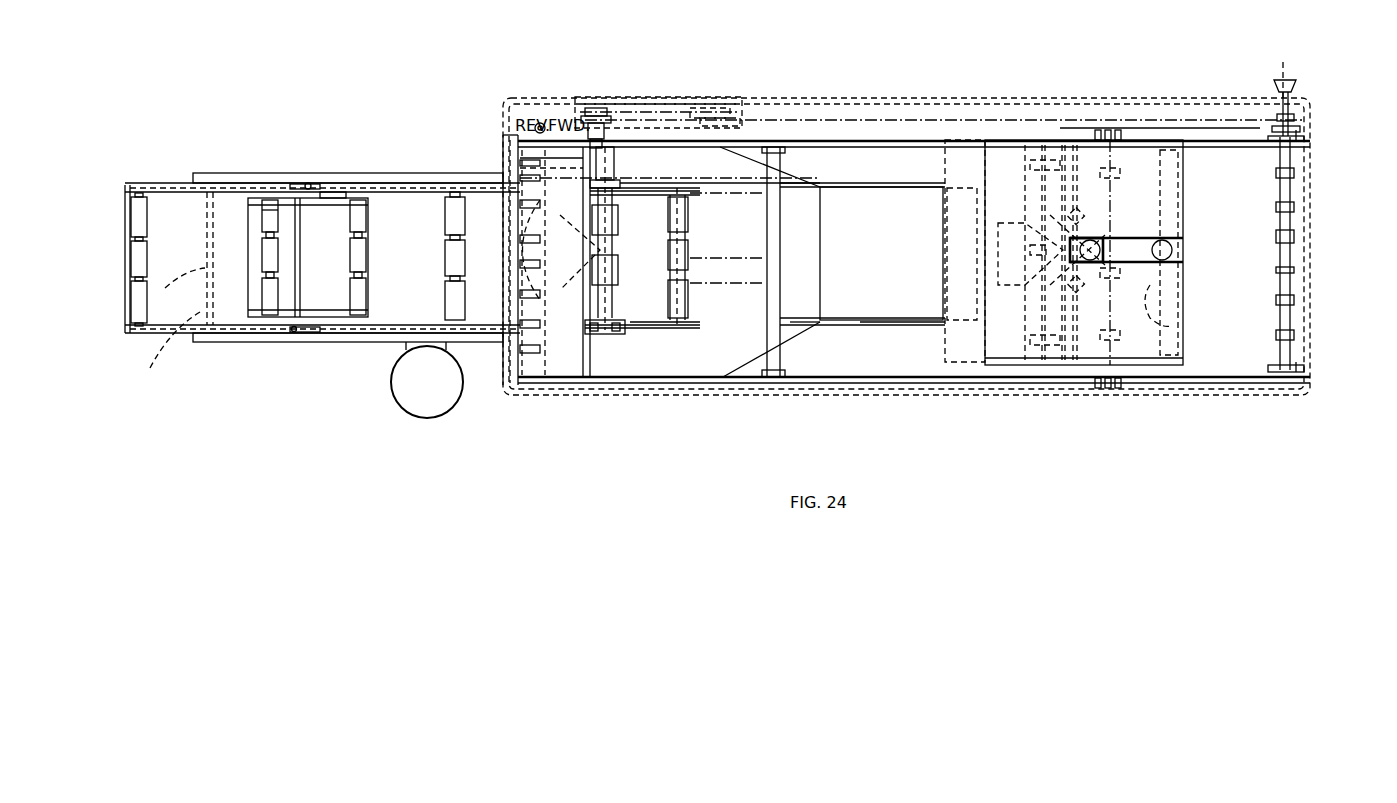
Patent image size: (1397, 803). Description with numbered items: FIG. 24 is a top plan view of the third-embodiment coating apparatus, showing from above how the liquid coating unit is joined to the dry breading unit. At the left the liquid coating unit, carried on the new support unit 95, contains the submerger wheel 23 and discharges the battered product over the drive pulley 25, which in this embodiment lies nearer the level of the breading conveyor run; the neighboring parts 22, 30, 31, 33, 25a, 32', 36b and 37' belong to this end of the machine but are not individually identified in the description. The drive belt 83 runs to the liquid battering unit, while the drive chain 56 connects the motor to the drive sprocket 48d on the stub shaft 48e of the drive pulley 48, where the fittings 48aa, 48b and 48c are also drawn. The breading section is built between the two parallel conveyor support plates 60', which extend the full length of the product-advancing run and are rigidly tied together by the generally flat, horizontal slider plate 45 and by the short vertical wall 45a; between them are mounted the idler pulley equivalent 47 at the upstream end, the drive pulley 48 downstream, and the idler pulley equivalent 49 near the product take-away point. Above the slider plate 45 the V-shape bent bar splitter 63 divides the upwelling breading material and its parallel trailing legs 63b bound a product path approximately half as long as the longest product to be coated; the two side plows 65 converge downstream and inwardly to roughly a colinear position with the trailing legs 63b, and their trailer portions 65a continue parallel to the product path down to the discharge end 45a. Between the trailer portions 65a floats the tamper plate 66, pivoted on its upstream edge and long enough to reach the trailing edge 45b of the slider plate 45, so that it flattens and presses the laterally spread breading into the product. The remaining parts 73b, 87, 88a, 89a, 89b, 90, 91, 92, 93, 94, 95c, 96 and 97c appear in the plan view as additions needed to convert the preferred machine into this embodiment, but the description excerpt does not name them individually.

The end roller 22 is at (142, 211).
The submerger wheel 23 is at (333, 192).
The drive pulley 25 is at (608, 232).
The rod collar 25a is at (612, 152).
The roller 30 is at (362, 205).
The roller 31 is at (265, 210).
The feed conveyor 32' is at (412, 155).
The roller unit 33 is at (308, 237).
The motor support 36b is at (405, 346).
The drive motor 37' is at (410, 382).
The slider plate 45 is at (730, 252).
The short vertical wall 45a is at (578, 130).
The trailing edge of slider plate 45b is at (965, 251).
The idler pulley equivalent 47 is at (520, 228).
The drive pulley 48 is at (1278, 232).
The shaft end fitting 48aa is at (1298, 135).
The shaft head 48b is at (1300, 88).
The shaft bearing 48c is at (1283, 128).
The drive sprocket 48d is at (1305, 118).
The stub shaft 48e is at (1278, 74).
The idler pulley equivalent 49 is at (1108, 190).
The drive chain 56 is at (815, 120).
The conveyor support plate 60' is at (914, 243).
The splitter 63 is at (592, 336).
The trailing legs 63b is at (668, 328).
The side plows 65 is at (808, 326).
The trailer portion 65a is at (888, 326).
The tamper plate 66 is at (886, 242).
The cam plate 73b is at (1008, 215).
The drive belt 83 is at (635, 120).
The guide plate 87 is at (167, 347).
The bearing plate 88a is at (1275, 143).
The lower plate 89a is at (622, 323).
The upper plate 89b is at (654, 268).
The cylinder 90 is at (690, 222).
The drive cylinder 91 is at (1160, 240).
The housing frame 92 is at (1185, 178).
The linkage 93 is at (1180, 334).
The cross linkage 94 is at (1077, 252).
The support unit 95 is at (255, 175).
The frame column 95c is at (503, 143).
The guide plate 96 is at (1183, 266).
The deflector 97c is at (179, 289).